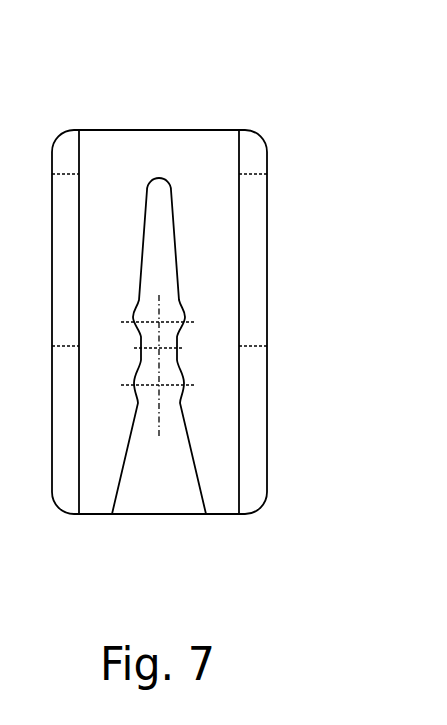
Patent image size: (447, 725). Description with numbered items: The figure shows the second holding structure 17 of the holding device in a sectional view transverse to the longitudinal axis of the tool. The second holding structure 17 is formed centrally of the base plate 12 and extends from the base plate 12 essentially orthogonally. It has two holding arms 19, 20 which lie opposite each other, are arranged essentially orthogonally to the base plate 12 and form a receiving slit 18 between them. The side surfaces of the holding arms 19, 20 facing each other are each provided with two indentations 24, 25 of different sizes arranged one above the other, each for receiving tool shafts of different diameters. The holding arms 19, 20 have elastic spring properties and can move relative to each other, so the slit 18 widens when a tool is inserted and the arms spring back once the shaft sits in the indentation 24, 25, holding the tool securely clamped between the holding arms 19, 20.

The second holding structure 17 is at (214, 312).
The base plate 12 is at (250, 170).
The holding arm 20 is at (97, 485).
The holding arm 19 is at (216, 479).
The receiving slit 18 is at (244, 398).
The indentation 24 is at (182, 313).
The indentation 25 is at (182, 379).